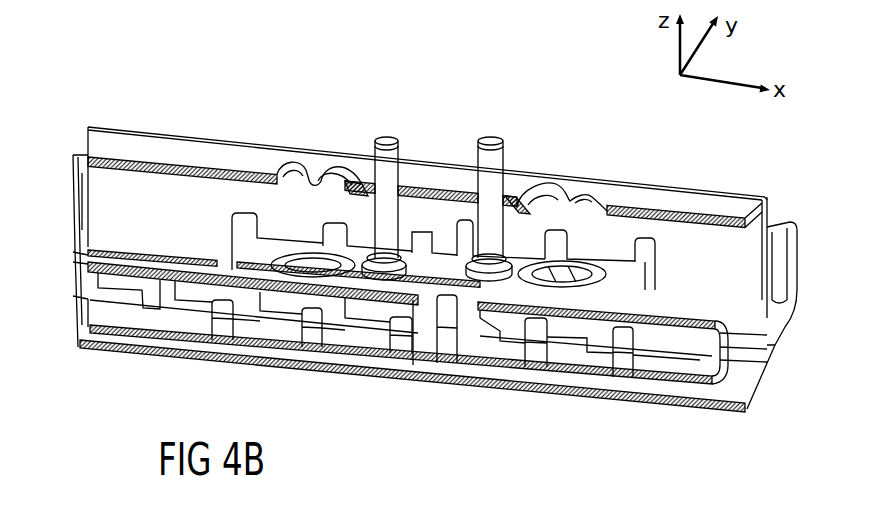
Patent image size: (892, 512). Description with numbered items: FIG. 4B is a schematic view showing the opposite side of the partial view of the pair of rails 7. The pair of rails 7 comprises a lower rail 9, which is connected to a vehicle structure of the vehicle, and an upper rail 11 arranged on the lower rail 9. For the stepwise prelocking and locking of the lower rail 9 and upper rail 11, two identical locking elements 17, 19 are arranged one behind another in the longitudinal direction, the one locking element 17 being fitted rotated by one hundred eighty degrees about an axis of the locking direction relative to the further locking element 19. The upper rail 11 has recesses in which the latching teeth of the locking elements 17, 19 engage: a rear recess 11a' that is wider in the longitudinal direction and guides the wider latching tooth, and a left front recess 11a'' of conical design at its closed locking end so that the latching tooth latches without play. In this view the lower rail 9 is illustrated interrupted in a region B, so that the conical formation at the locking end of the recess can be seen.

The pair of rails 7 is at (126, 98).
The lower rail 9 is at (742, 387).
The upper rail 11 is at (275, 158).
The recess 11a' is at (642, 397).
The left front recess 11a'' is at (430, 376).
The locking element 17 is at (650, 262).
The locking element 19 is at (228, 236).
The region B is at (478, 333).